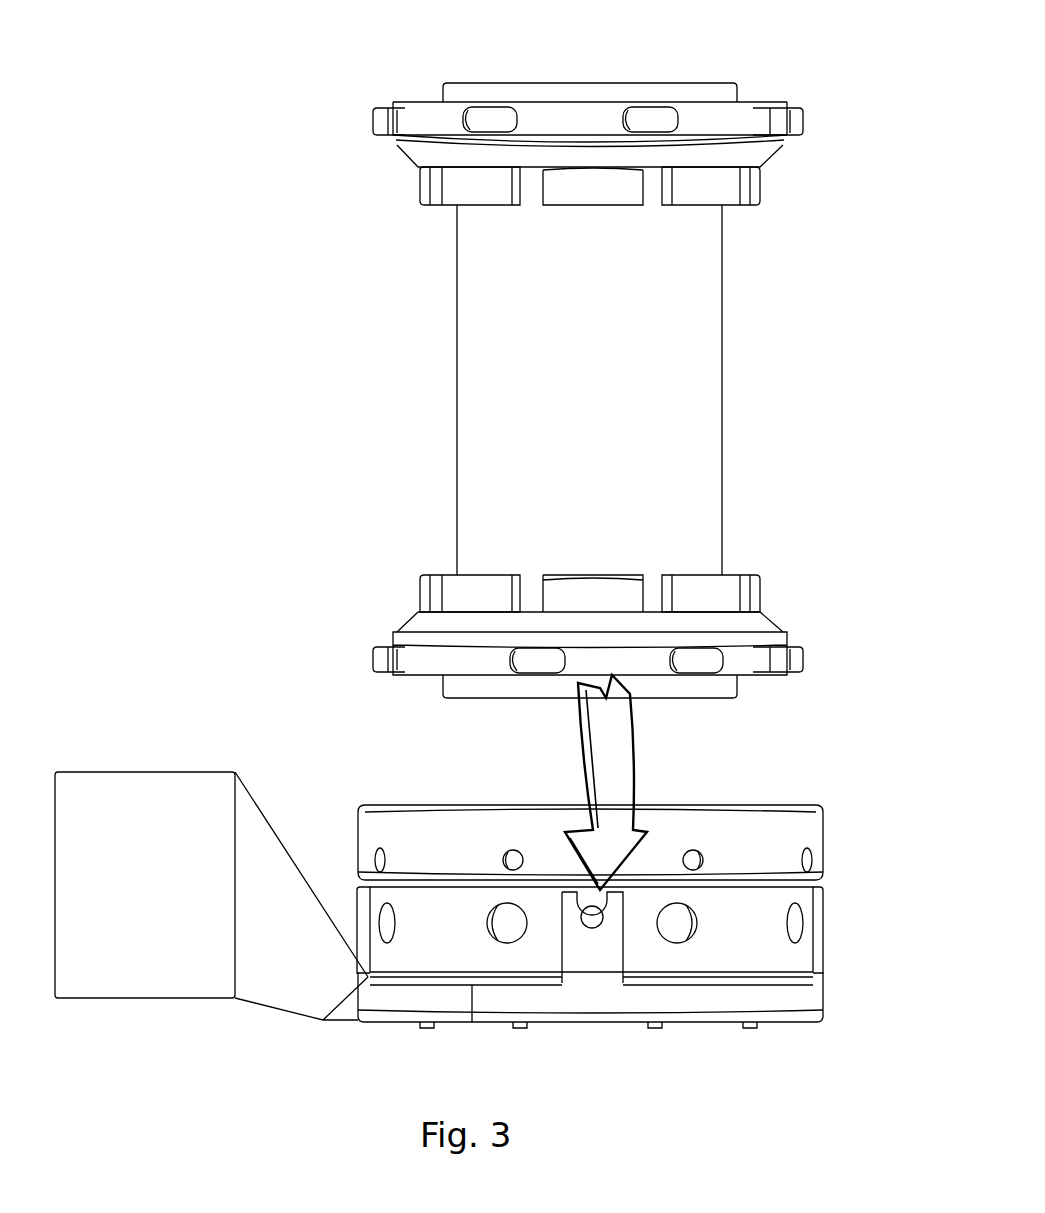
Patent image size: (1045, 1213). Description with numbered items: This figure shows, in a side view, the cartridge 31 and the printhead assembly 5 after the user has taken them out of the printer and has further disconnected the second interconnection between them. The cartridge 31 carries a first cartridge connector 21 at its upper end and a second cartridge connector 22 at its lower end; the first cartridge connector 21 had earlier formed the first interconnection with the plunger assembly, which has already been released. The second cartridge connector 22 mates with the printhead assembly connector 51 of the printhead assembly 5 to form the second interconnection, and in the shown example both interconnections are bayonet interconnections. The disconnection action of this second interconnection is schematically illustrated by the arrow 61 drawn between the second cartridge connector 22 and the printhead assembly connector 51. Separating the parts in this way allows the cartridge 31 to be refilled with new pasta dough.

The first cartridge connector 21 is at (347, 153).
The second cartridge connector 22 is at (347, 610).
The cartridge 31 is at (760, 392).
The printhead assembly 5 is at (848, 895).
The printhead assembly connector 51 is at (381, 780).
The arrow 61 is at (634, 748).